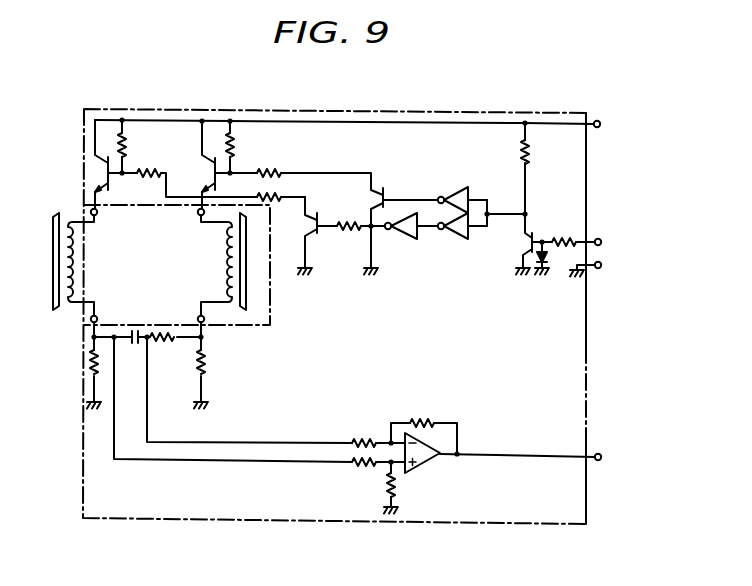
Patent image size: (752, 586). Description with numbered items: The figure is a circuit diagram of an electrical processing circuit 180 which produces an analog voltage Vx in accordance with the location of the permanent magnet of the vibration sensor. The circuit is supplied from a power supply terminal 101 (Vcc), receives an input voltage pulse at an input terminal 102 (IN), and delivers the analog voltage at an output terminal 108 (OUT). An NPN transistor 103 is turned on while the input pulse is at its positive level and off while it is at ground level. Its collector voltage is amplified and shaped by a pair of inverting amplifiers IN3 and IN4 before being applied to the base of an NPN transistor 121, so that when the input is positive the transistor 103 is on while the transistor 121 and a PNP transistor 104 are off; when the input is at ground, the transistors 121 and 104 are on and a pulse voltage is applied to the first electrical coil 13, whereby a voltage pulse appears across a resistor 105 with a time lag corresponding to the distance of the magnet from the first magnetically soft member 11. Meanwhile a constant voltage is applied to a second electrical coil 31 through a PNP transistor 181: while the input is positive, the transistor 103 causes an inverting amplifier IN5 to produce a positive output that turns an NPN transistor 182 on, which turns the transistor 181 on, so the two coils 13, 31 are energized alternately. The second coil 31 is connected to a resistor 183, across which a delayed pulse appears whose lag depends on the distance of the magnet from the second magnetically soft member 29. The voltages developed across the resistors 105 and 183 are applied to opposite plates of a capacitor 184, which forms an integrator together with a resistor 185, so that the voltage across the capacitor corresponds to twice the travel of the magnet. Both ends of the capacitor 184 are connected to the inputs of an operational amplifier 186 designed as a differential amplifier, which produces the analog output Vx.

The electrical processing circuit 180 is at (155, 108).
The PNP transistor 181 is at (200, 168).
The NPN transistor 182 is at (387, 190).
The PNP transistor 104 is at (111, 186).
The NPN transistor 121 is at (318, 242).
The NPN transistor 103 is at (514, 250).
The magnetically soft member 11 is at (52, 255).
The electrical coil 13 is at (80, 280).
The electrical coil 31 is at (222, 273).
The magnetically soft member 29 is at (245, 295).
The resistor 105 is at (86, 360).
The resistor 183 is at (207, 360).
The resistor 185 is at (170, 345).
The capacitor 184 is at (132, 352).
The operational amplifier 186 is at (425, 466).
The power supply terminal 101 is at (597, 119).
The input terminal 102 is at (601, 238).
The output terminal 108 is at (598, 452).
The inverting amplifier IN3 is at (457, 240).
The inverting amplifier IN4 is at (401, 241).
The inverting amplifier IN5 is at (456, 186).